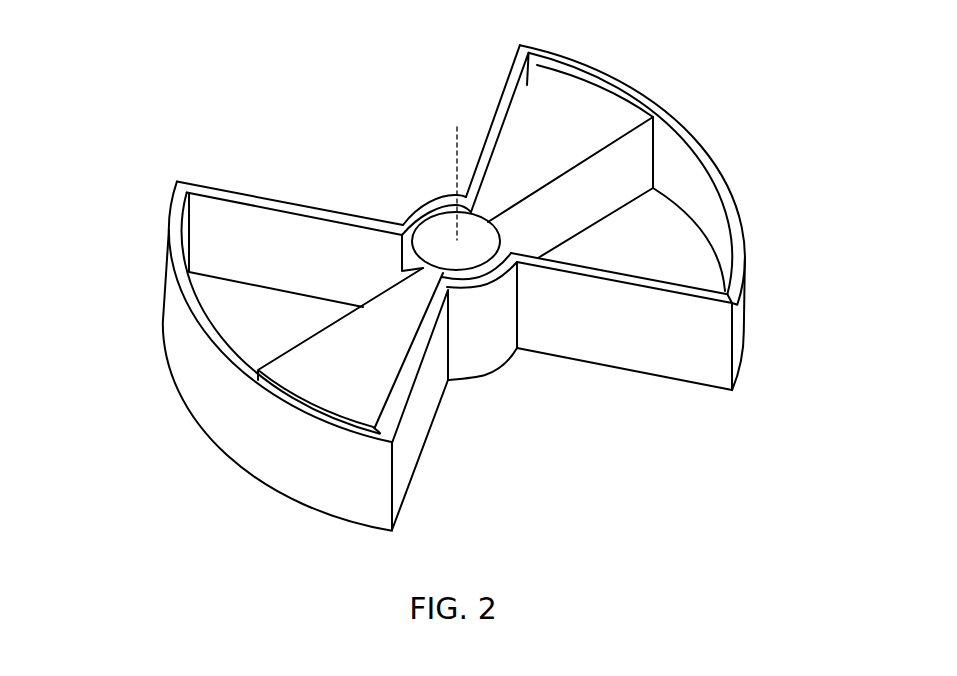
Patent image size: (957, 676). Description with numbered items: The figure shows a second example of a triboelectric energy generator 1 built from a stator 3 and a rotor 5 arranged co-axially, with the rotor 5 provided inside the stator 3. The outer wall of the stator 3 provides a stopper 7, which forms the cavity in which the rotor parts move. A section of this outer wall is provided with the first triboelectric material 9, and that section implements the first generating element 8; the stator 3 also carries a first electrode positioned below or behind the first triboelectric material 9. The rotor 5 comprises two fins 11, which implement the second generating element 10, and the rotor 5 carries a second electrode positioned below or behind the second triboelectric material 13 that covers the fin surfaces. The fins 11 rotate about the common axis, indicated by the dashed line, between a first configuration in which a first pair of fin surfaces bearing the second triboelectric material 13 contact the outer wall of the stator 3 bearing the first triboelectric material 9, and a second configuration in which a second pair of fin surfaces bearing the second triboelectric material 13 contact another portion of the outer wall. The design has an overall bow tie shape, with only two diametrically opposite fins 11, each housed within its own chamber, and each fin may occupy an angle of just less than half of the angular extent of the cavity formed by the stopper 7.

The triboelectric energy generator 1 is at (150, 139).
The stator 3 is at (745, 292).
The rotor 5 is at (610, 115).
The stopper 7 is at (438, 387).
The first generating element 8 is at (357, 252).
The first triboelectric material 9 is at (270, 237).
The second generating element 10 is at (618, 193).
The fins 11 is at (303, 360).
The second triboelectric material 13 is at (637, 168).